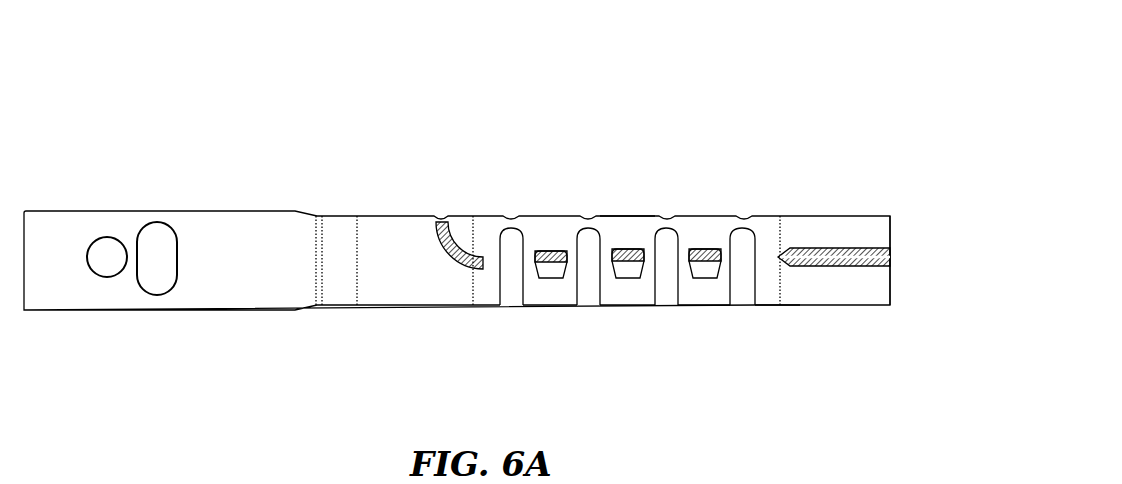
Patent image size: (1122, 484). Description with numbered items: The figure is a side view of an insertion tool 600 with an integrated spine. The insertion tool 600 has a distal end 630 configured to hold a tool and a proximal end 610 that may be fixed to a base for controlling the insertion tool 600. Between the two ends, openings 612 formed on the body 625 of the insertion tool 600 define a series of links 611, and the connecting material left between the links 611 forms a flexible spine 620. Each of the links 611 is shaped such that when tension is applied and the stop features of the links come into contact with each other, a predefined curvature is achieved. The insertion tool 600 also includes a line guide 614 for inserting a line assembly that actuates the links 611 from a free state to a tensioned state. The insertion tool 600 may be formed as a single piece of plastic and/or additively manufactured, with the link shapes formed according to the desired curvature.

The insertion tool 600 is at (838, 89).
The proximal end 610 is at (846, 213).
The links 611 is at (550, 305).
The openings 612 is at (738, 296).
The line guide 614 is at (440, 217).
The flexible spine 620 is at (510, 218).
The body 625 is at (640, 213).
The distal end 630 is at (62, 211).